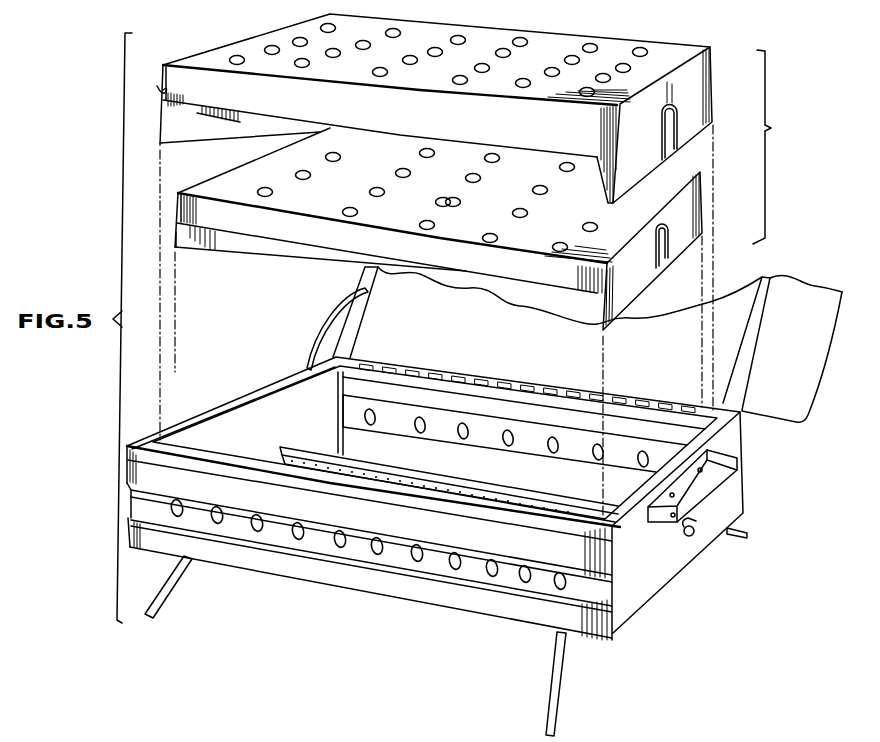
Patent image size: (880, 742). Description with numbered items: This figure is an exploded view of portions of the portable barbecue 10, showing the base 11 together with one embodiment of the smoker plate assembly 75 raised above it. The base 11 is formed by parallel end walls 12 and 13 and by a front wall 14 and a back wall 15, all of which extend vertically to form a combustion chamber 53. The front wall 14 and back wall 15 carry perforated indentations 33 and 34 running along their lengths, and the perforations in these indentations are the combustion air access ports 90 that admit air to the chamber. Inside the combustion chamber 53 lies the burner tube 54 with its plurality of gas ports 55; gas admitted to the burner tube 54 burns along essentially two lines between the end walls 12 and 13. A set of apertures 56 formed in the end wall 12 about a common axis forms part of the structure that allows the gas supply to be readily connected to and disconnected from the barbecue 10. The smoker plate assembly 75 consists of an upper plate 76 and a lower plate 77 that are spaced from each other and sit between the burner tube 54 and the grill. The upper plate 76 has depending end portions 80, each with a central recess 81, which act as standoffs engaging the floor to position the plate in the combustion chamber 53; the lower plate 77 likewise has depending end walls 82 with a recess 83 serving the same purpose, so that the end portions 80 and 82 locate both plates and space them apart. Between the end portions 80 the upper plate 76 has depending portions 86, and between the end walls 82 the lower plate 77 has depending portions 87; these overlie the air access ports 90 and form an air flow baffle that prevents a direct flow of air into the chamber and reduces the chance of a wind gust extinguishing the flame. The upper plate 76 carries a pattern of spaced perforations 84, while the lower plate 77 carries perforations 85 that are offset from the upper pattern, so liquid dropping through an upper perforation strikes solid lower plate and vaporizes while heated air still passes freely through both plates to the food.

The portable barbecue 10 is at (110, 418).
The base 11 is at (126, 532).
The end wall 12 is at (655, 592).
The end wall 13 is at (208, 434).
The front wall 14 is at (292, 573).
The back wall 15 is at (387, 388).
The perforated indentation 33 is at (620, 628).
The perforated indentation 34 is at (740, 480).
The combustion chamber 53 is at (272, 403).
The burner tube 54 is at (455, 477).
The gas ports 55 is at (390, 473).
The apertures 56 is at (694, 536).
The smoker plate assembly 75 is at (779, 147).
The upper plate 76 is at (607, 46).
The lower plate 77 is at (216, 184).
The depending end portions 80 is at (706, 86).
The central recess 81 is at (674, 131).
The depending end walls 82 is at (690, 213).
The recess 83 is at (661, 263).
The perforations 84 is at (521, 40).
The perforations 85 is at (503, 157).
The depending portions 86 is at (151, 83).
The depending portions 87 is at (249, 222).
The combustion air access ports 90 is at (373, 548).